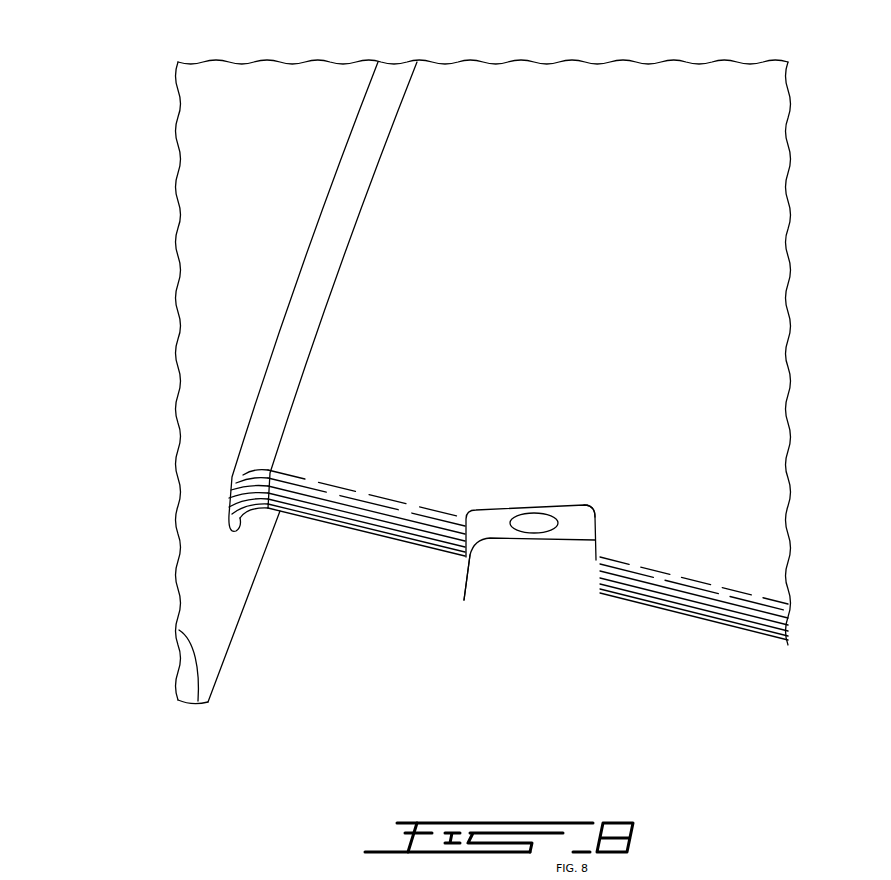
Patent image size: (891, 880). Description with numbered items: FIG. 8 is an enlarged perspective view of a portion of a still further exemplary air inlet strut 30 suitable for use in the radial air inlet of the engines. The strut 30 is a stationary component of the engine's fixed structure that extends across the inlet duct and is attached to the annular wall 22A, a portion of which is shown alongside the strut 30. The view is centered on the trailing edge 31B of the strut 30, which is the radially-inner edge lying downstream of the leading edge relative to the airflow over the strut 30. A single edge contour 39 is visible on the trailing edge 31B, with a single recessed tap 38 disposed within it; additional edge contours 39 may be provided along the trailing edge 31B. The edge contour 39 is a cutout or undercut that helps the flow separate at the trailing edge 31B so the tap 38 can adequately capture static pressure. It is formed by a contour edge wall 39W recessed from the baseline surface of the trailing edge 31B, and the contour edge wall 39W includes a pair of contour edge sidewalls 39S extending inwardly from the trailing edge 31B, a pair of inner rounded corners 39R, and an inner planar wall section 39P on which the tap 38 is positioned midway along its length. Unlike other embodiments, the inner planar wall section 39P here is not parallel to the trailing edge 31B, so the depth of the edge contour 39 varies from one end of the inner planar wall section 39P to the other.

The air inlet strut 30 is at (750, 200).
The annular wall 22A is at (215, 430).
The trailing edge 31B is at (341, 568).
The tap 38 is at (535, 523).
The edge contour 39 is at (660, 384).
The inner planar wall section 39P is at (572, 522).
The inner rounded corner 39R is at (597, 515).
The contour edge sidewall 39S is at (464, 600).
The contour edge wall 39W is at (612, 557).